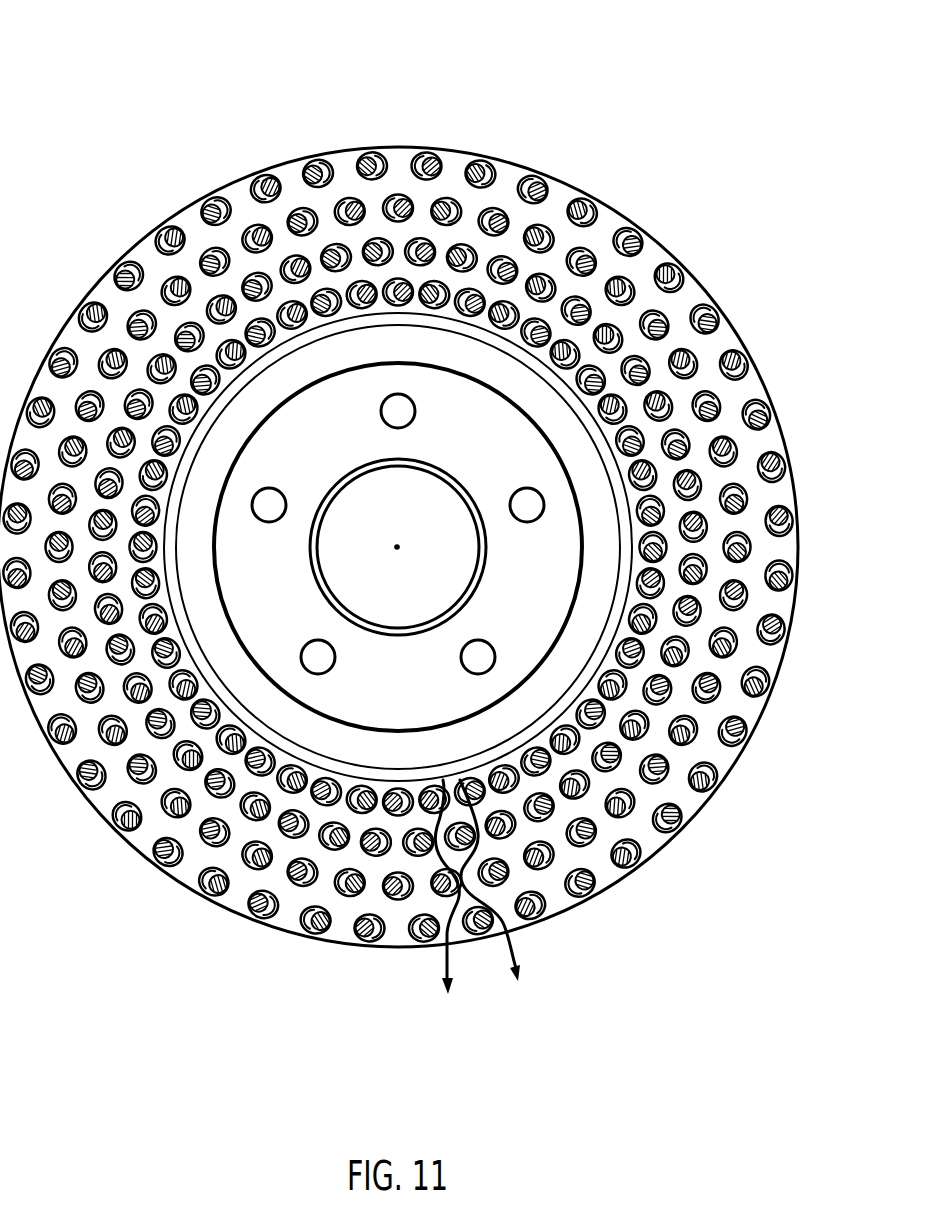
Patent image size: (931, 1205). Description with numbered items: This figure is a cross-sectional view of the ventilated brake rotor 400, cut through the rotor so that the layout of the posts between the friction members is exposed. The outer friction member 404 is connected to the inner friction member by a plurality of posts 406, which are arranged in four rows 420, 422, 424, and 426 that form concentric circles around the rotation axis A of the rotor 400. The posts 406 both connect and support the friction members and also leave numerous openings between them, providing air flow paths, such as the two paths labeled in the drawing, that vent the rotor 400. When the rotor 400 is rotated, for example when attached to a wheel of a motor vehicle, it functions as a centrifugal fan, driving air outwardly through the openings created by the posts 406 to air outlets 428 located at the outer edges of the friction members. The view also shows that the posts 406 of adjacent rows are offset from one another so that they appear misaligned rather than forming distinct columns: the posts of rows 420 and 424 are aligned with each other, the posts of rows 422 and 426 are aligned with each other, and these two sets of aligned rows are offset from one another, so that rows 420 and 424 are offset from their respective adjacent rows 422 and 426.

The brake rotor 400 is at (122, 68).
The outer friction member 404 is at (756, 362).
The posts 406 is at (494, 164).
The row 420 is at (550, 337).
The row 422 is at (553, 293).
The row 424 is at (592, 256).
The row 426 is at (598, 212).
The air outlets 428 is at (445, 937).
The rotation axis A is at (400, 547).